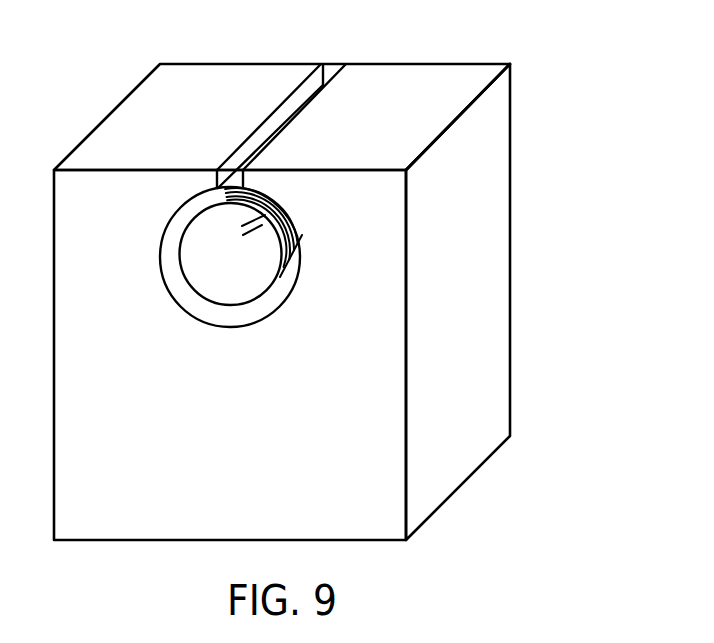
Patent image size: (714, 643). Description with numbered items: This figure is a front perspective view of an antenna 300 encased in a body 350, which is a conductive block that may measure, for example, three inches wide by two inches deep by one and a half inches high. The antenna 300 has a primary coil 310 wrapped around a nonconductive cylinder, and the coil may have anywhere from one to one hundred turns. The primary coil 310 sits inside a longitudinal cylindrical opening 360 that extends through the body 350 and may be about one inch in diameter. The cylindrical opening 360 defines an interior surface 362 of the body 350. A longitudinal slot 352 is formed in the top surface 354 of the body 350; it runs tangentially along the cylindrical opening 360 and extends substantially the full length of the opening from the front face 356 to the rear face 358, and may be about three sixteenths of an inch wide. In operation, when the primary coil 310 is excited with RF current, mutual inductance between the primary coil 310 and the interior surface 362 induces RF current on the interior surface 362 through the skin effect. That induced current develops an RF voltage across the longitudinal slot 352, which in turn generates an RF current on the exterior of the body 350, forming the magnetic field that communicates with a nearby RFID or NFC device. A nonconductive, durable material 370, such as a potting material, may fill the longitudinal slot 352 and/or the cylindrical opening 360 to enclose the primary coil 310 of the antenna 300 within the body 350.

The antenna 300 is at (244, 242).
The primary coil 310 is at (287, 237).
The body 350 is at (326, 288).
The longitudinal slot 352 is at (328, 68).
The top surface 354 is at (463, 96).
The front face 356 is at (388, 392).
The rear face 358 is at (511, 172).
The cylindrical opening 360 is at (270, 312).
The interior surface 362 is at (202, 313).
The nonconductive durable material 370 is at (312, 92).